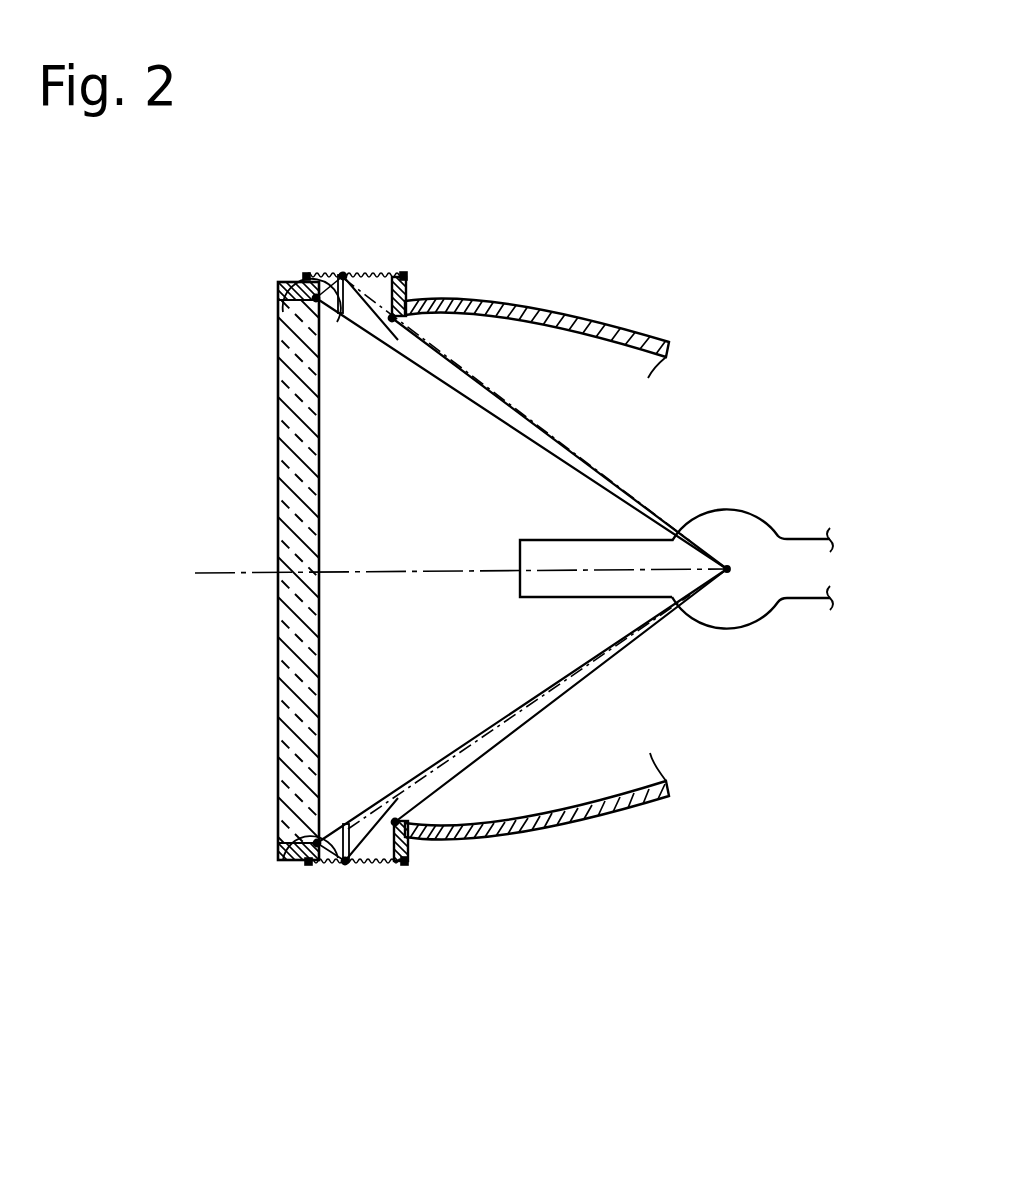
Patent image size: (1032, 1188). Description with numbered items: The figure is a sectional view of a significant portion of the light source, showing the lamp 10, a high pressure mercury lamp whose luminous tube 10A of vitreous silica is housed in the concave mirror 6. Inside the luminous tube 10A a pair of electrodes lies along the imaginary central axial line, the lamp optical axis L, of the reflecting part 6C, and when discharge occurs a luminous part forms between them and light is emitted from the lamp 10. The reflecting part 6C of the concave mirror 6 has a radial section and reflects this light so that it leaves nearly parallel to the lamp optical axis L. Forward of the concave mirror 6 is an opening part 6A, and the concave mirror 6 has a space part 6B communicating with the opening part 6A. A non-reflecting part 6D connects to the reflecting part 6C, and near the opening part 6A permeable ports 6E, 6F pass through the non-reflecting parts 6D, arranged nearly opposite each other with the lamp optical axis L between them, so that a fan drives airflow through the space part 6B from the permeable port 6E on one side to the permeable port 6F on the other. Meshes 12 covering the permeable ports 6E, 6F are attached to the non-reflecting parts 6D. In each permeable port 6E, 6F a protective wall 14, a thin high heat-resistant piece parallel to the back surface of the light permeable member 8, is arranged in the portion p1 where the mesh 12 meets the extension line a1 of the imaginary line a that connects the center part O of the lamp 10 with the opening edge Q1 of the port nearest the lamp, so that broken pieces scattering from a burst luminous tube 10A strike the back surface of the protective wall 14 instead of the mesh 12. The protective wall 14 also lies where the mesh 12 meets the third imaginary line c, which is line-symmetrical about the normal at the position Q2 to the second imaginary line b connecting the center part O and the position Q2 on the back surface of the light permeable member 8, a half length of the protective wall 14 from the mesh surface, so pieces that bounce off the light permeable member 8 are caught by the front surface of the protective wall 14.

The concave mirror 6 is at (558, 572).
The opening part 6A is at (340, 460).
The space part 6B is at (578, 757).
The reflecting part 6C is at (513, 303).
The non-reflecting part 6D is at (406, 280).
The permeable port 6E is at (367, 274).
The permeable port 6F is at (377, 863).
The light permeable member 8 is at (248, 567).
The lamp 10 is at (712, 524).
The luminous tube 10A is at (846, 548).
The mesh 12 is at (324, 273).
The protective wall 14 is at (300, 292).
The lamp optical axis L is at (247, 573).
The center part of the lamp O is at (731, 572).
The opening edge Q1 is at (392, 323).
The position on the back surface of the light permeable member Q2 is at (315, 297).
The portion p1 is at (343, 275).
The imaginary line a is at (567, 450).
The extension line a1 is at (376, 838).
The second imaginary line b is at (483, 410).
The third imaginary line c is at (318, 282).